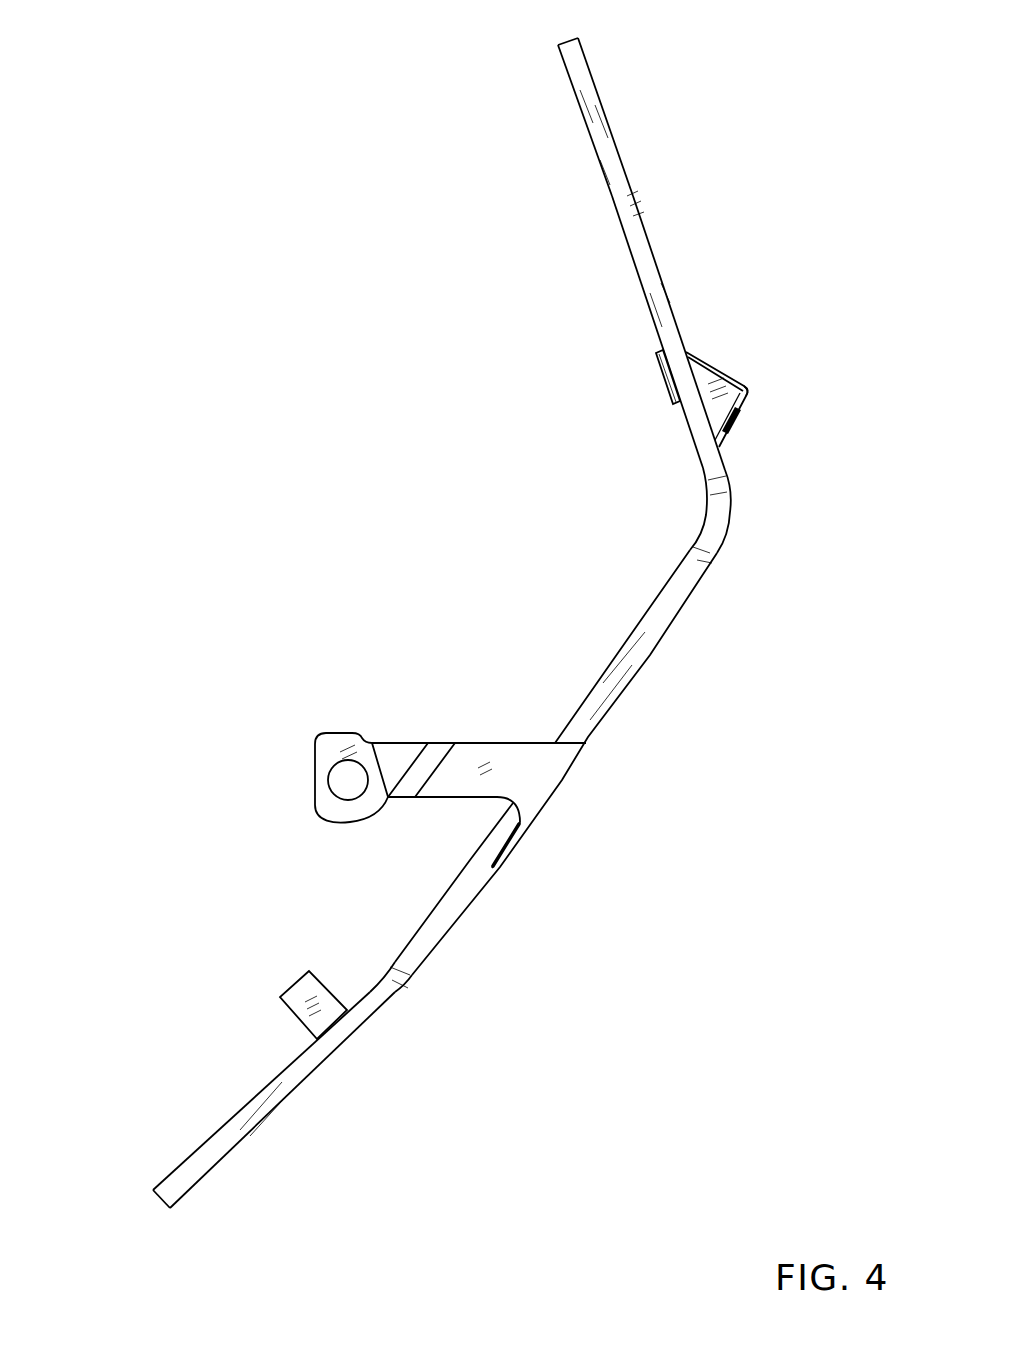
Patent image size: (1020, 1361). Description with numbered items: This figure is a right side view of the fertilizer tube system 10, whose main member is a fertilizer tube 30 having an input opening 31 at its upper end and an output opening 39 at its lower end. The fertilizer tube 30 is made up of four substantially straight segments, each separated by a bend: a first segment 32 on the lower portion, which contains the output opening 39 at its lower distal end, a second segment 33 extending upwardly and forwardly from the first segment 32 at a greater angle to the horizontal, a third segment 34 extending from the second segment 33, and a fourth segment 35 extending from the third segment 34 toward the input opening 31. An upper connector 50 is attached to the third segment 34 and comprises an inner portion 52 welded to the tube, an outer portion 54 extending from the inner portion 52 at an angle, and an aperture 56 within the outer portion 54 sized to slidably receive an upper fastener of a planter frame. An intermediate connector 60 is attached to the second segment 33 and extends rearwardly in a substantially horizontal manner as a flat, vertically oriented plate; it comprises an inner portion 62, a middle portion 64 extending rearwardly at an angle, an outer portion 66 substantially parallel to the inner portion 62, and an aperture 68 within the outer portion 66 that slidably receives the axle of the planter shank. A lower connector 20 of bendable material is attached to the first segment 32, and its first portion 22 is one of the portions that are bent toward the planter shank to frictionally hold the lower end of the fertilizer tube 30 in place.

The fertilizer tube system 10 is at (280, 222).
The lower connector 20 is at (279, 974).
The first portion 22 is at (297, 1004).
The fertilizer tube 30 is at (650, 585).
The input opening 31 is at (562, 42).
The first segment 32 is at (263, 1122).
The second segment 33 is at (650, 655).
The third segment 34 is at (647, 308).
The fourth segment 35 is at (587, 130).
The output opening 39 is at (154, 1199).
The upper connector 50 is at (733, 351).
The inner portion 52 is at (698, 362).
The outer portion 54 is at (745, 400).
The aperture 56 is at (733, 424).
The intermediate connector 60 is at (479, 720).
The inner portion 62 is at (517, 745).
The middle portion 64 is at (436, 750).
The outer portion 66 is at (382, 752).
The aperture 68 is at (328, 781).